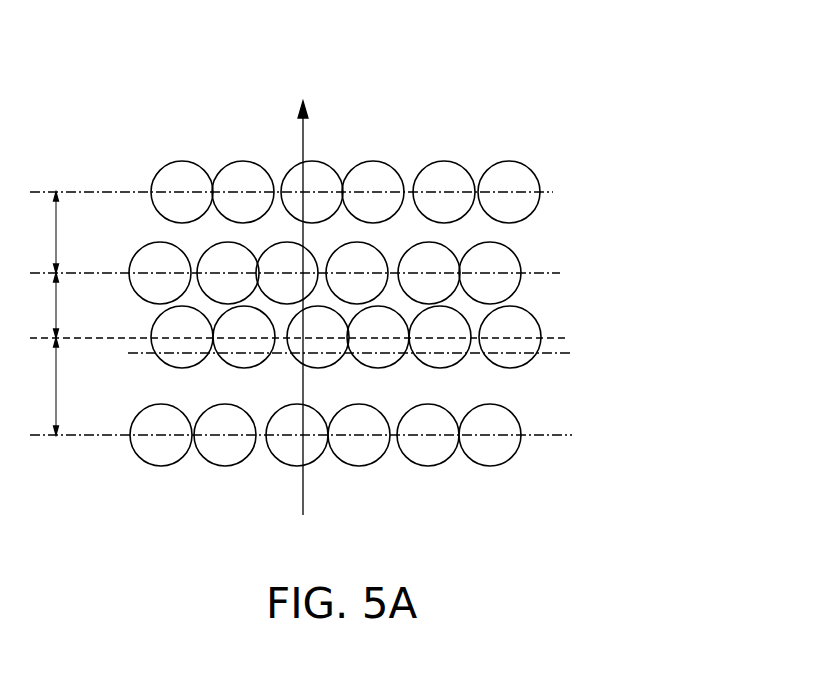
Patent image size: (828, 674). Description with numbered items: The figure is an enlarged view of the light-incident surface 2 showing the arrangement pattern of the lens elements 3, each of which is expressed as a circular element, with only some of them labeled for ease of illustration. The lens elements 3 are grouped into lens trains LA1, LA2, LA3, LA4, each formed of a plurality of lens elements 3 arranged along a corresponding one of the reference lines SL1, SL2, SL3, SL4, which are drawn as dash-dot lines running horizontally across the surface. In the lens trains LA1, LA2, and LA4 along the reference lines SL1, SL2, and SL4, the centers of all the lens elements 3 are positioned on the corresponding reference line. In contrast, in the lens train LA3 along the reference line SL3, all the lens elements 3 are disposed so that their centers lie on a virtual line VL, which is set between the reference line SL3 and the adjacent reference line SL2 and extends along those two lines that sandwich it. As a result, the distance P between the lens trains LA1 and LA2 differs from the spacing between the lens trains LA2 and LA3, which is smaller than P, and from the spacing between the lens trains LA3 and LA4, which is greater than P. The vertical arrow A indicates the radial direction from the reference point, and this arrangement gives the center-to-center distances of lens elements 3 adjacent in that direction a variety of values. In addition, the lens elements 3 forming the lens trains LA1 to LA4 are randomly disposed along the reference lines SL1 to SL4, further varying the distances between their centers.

The light-incident surface 2 is at (548, 62).
The lens element 3 is at (186, 159).
The arrow A is at (306, 492).
The distance P is at (69, 313).
The reference line SL1 is at (555, 191).
The reference line SL2 is at (557, 272).
The reference line SL3 is at (558, 357).
The reference line SL4 is at (570, 435).
The virtual line VL is at (315, 336).
The lens train LA1 is at (551, 135).
The lens train LA2 is at (551, 221).
The lens train LA3 is at (551, 311).
The lens train LA4 is at (532, 405).